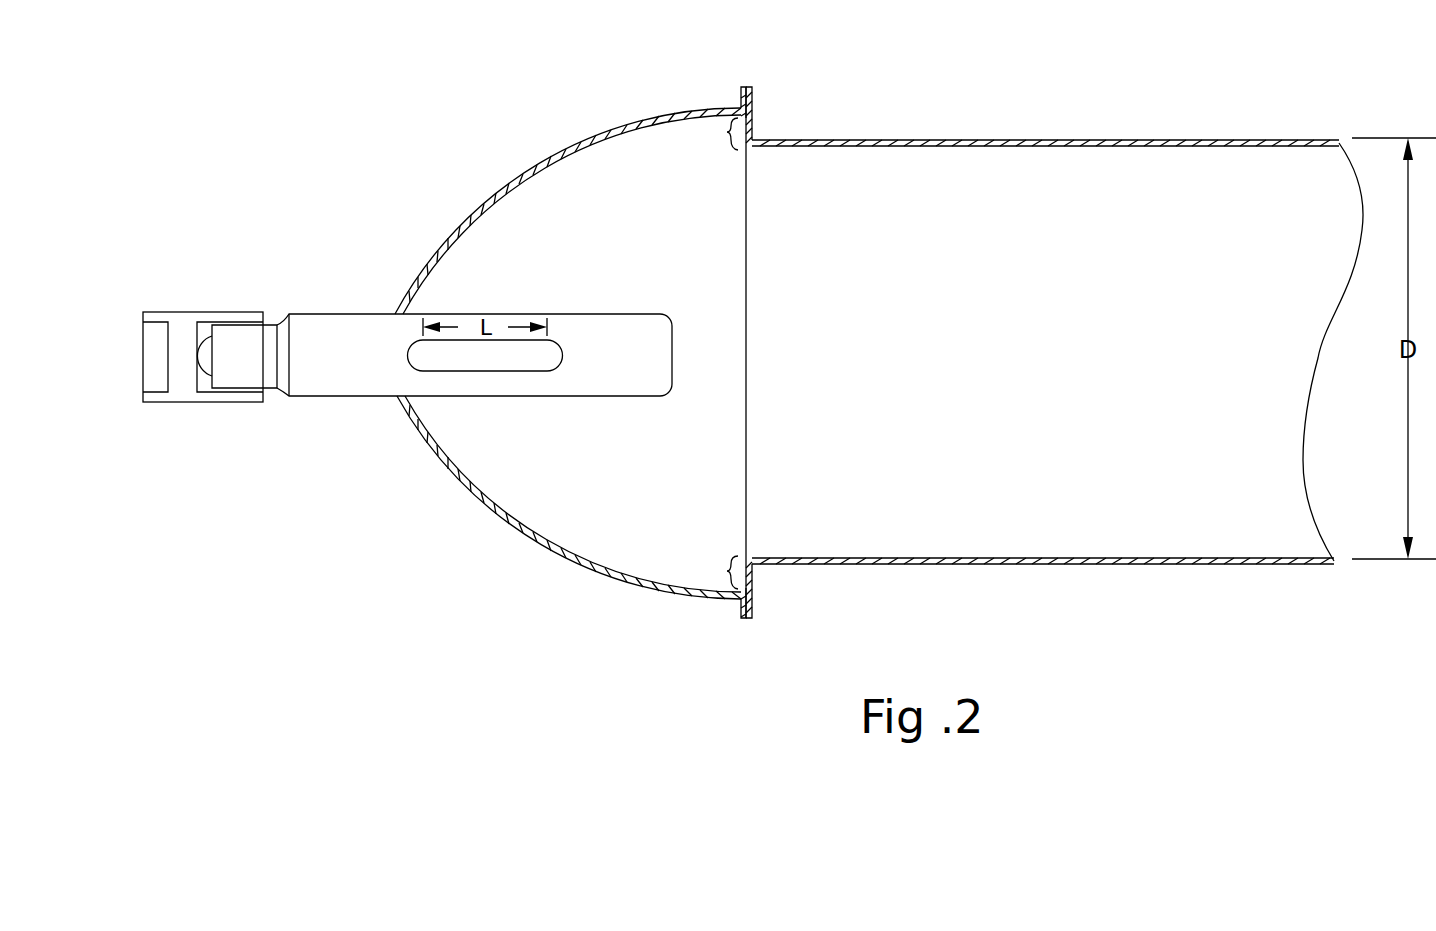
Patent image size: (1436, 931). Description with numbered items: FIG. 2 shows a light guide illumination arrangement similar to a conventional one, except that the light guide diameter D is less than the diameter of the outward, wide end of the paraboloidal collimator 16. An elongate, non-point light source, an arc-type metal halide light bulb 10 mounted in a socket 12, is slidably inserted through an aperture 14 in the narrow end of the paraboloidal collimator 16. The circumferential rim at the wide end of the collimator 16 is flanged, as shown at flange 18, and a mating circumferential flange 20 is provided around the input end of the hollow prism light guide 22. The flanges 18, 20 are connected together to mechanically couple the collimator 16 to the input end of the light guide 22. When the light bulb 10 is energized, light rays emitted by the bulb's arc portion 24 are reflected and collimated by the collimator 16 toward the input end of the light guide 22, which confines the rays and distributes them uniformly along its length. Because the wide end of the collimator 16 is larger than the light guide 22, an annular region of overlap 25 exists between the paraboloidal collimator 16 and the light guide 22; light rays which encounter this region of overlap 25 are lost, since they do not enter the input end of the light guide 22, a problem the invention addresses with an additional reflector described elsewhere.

The light bulb 10 is at (318, 398).
The socket 12 is at (173, 403).
The aperture 14 is at (403, 312).
The paraboloidal collimator 16 is at (562, 557).
The flange 18 is at (738, 92).
The mating circumferential flange 20 is at (752, 92).
The hollow prism light guide 22 is at (1072, 566).
The arc portion 24 is at (445, 359).
The annular region of overlap 25 is at (716, 353).